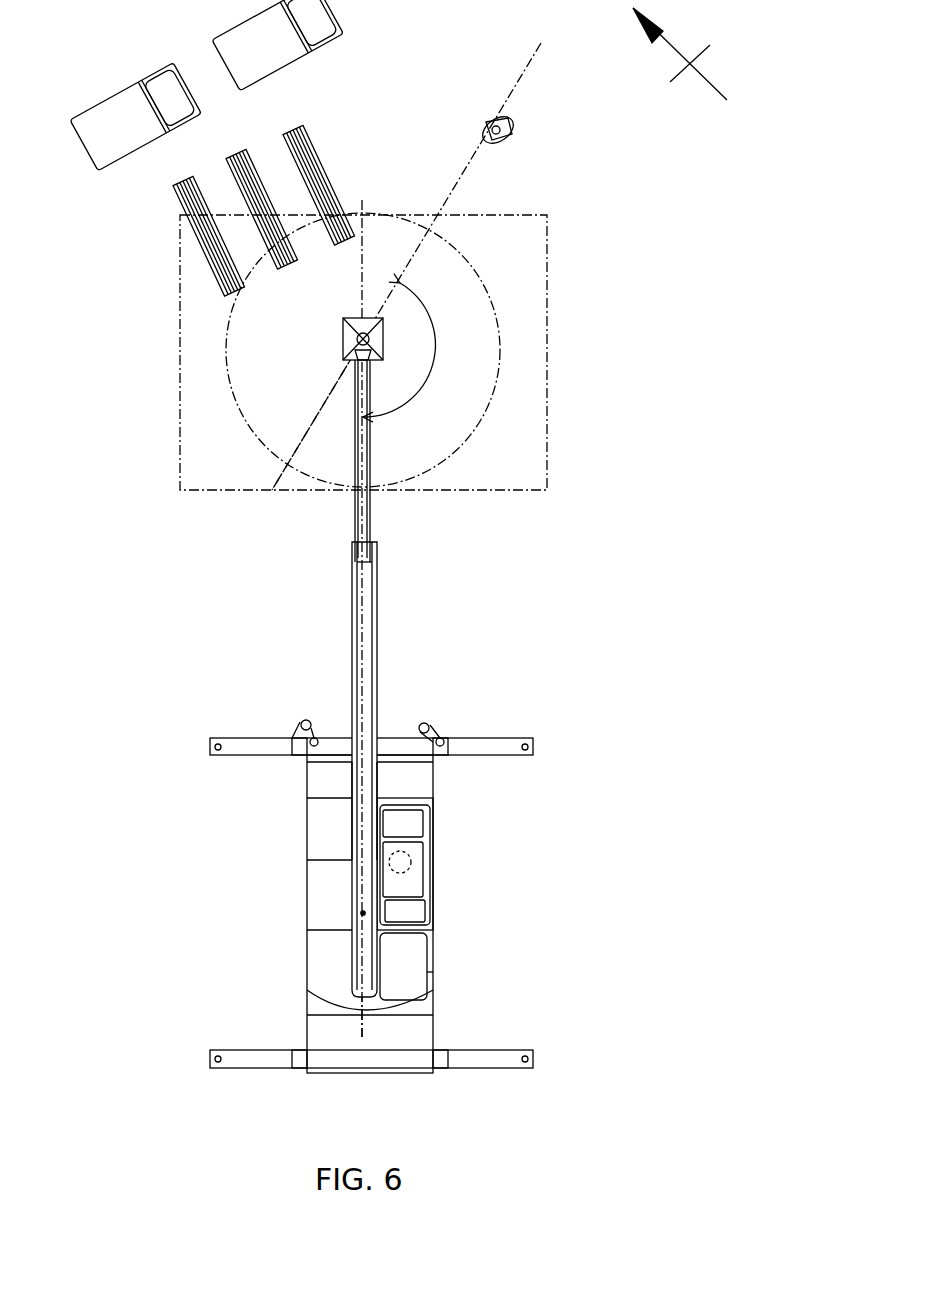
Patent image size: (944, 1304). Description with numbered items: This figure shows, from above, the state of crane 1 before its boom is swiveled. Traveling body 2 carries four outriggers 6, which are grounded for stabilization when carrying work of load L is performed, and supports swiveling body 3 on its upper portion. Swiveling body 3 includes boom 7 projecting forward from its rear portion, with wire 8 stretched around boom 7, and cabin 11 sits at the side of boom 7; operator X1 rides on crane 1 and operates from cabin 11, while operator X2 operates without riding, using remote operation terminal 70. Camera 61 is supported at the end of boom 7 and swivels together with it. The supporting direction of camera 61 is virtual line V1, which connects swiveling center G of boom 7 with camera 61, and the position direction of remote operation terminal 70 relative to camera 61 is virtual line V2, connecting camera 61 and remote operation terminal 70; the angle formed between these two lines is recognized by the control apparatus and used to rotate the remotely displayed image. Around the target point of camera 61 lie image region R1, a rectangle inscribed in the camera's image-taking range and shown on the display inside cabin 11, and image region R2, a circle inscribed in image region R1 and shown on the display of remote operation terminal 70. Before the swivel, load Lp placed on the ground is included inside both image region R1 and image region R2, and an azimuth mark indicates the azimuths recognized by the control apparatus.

The load placed on the ground Lp is at (280, 153).
The operator X2 is at (460, 100).
The remote operation terminal 70 is at (497, 148).
The image region R1 is at (547, 428).
The image region R2 is at (470, 447).
The virtual line V1 is at (365, 607).
The virtual line V2 is at (313, 422).
The load L is at (375, 314).
The camera 61 is at (343, 345).
The boom 7 is at (373, 604).
The crane 1 is at (497, 662).
The cabin 11 is at (397, 768).
The outrigger 6 is at (208, 747).
The wire 8 is at (357, 805).
The operator X1 is at (437, 843).
The swiveling center G is at (361, 913).
The swiveling body 3 is at (393, 1050).
The traveling body 2 is at (370, 919).